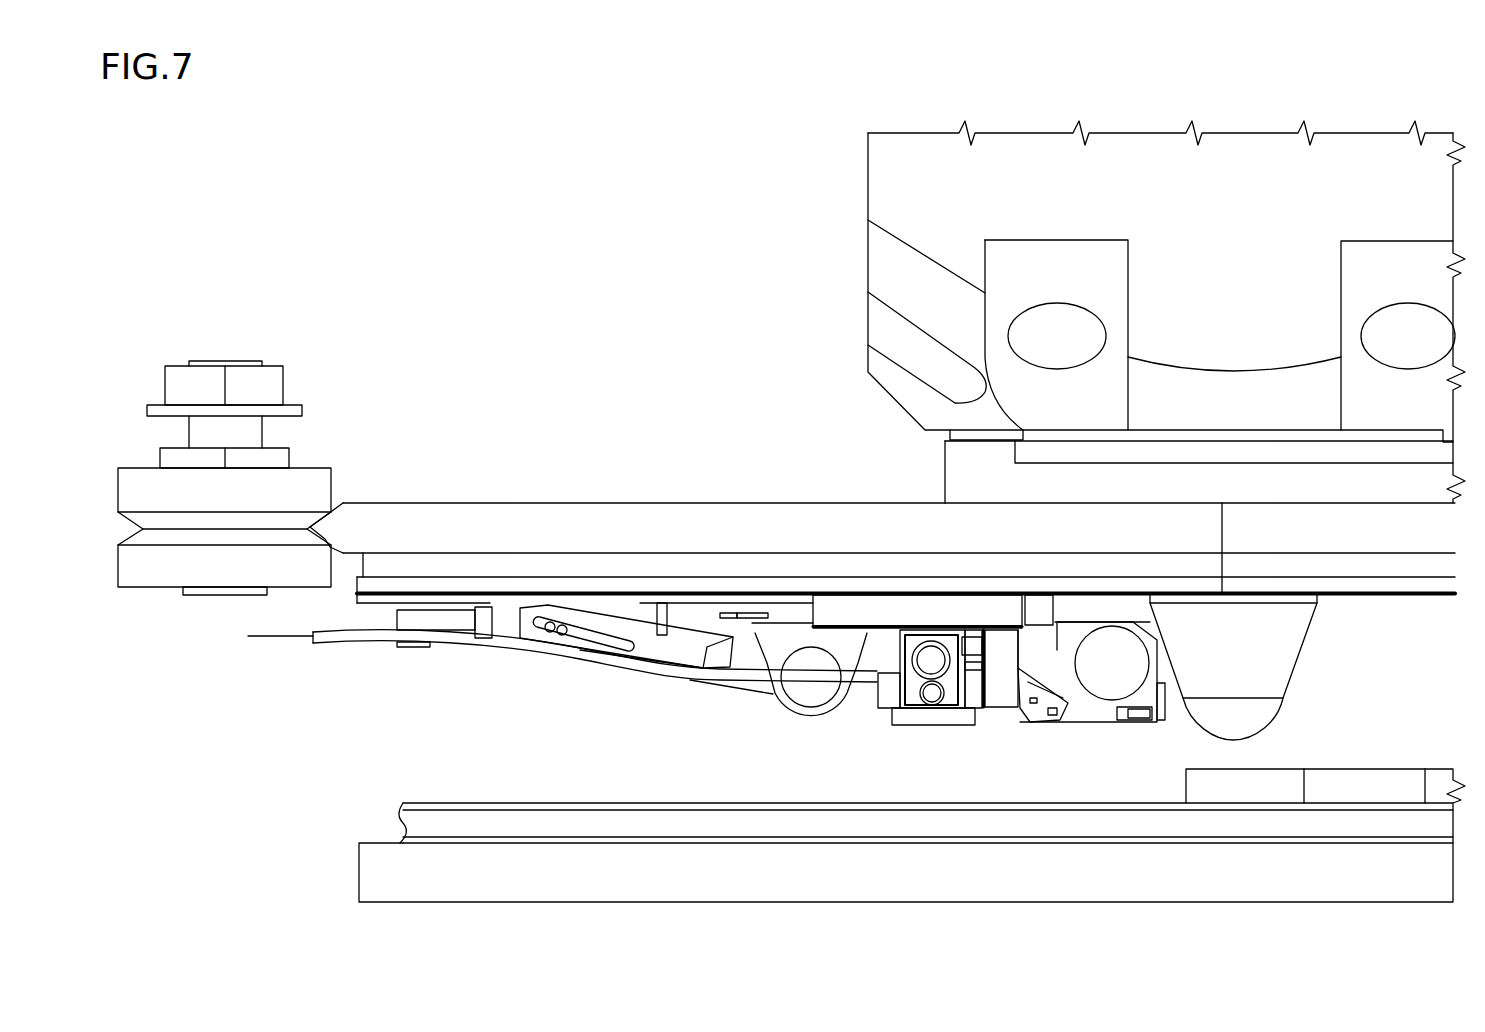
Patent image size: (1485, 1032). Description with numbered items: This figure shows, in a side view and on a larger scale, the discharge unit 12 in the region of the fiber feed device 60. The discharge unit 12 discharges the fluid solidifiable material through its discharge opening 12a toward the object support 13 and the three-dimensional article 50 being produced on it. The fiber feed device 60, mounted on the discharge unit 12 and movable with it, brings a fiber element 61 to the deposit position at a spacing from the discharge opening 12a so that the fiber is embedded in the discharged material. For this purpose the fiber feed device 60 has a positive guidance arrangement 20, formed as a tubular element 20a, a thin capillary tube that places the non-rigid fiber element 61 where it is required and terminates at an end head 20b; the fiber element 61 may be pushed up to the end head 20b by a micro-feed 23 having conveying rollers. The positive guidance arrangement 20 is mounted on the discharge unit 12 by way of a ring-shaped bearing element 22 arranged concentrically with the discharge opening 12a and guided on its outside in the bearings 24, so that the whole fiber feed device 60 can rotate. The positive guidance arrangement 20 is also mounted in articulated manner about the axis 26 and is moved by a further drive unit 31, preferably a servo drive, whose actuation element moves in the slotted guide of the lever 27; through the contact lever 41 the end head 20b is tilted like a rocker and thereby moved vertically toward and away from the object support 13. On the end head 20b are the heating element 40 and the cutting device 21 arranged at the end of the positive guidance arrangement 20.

The discharge unit 12 is at (852, 236).
The discharge opening 12a is at (1233, 738).
The object support 13 is at (398, 883).
The three-dimensional article 50 is at (1363, 790).
The bearing element 22 is at (480, 525).
The bearings 24 is at (318, 487).
The micro-feed 23 is at (932, 655).
The positive guidance arrangement 20 is at (537, 673).
The tubular element 20a is at (622, 665).
The end head 20b is at (1050, 655).
The lever 27 is at (675, 657).
The axis 26 is at (805, 697).
The contact lever 41 is at (865, 697).
The cutting device 21 is at (1107, 668).
The heating element 40 is at (1128, 728).
The further drive unit 31 is at (427, 647).
The fiber feed device 60 is at (728, 712).
The fiber element 61 is at (278, 637).